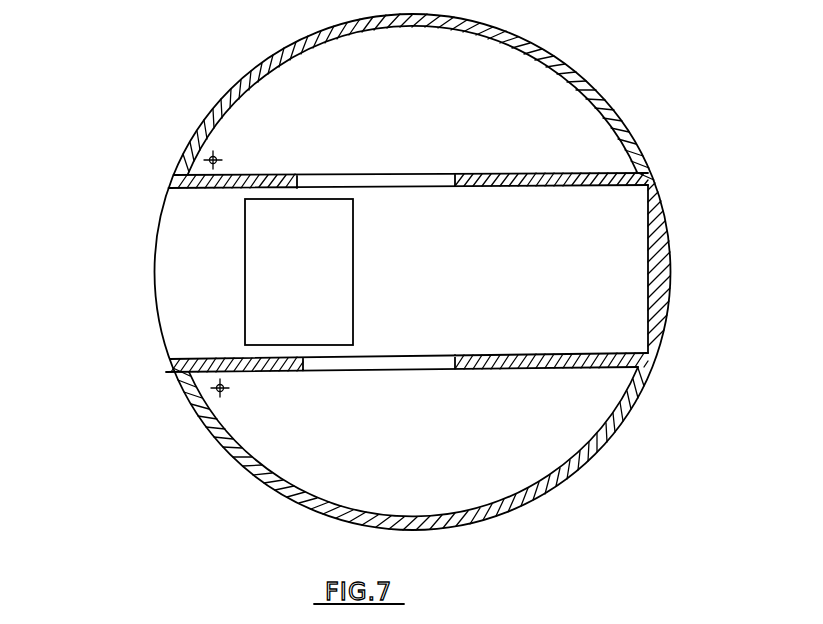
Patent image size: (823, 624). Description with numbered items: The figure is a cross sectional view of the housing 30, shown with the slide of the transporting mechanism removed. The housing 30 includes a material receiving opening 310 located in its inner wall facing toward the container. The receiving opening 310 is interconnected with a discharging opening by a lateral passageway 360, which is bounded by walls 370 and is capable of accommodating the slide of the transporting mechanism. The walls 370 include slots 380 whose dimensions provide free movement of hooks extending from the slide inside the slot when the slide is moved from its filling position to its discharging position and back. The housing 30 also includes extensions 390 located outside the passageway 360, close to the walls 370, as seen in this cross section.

The housing 30 is at (657, 273).
The material receiving opening 310 is at (303, 305).
The lateral passageway 360 is at (183, 272).
The walls 370 is at (528, 180).
The slots 380 is at (377, 180).
The extensions 390 is at (213, 160).